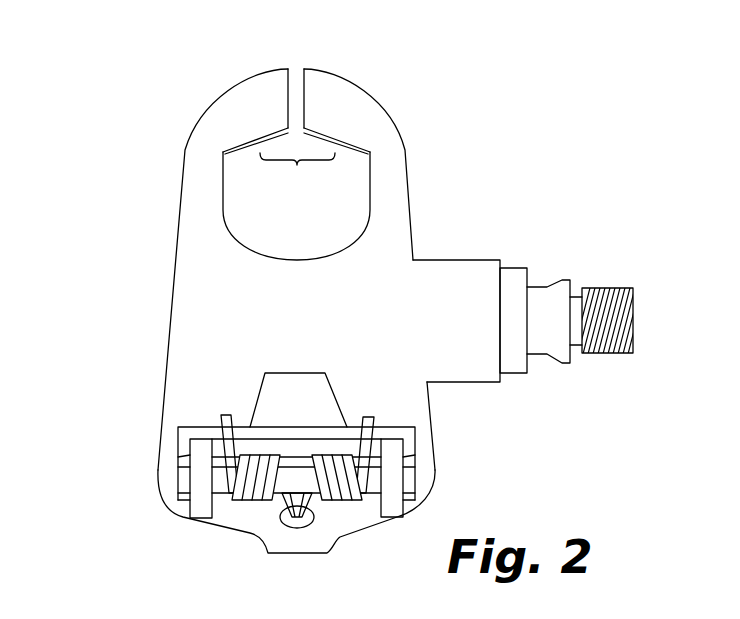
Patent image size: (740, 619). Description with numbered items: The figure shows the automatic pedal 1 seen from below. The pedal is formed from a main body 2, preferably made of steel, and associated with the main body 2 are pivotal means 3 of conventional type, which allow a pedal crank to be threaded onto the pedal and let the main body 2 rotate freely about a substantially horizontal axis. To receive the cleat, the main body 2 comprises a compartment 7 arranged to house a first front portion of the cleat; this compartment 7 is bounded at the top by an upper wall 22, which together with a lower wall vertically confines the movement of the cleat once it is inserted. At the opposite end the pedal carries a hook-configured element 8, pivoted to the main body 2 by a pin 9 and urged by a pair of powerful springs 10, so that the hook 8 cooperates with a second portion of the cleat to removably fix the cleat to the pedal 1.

The automatic pedal 1 is at (96, 151).
The main body 2 is at (437, 292).
The pivotal means 3 is at (513, 268).
The compartment 7 is at (296, 206).
The hook-configured element 8 is at (343, 522).
The pin 9 is at (183, 478).
The springs 10 is at (332, 460).
The upper wall 22 is at (252, 138).